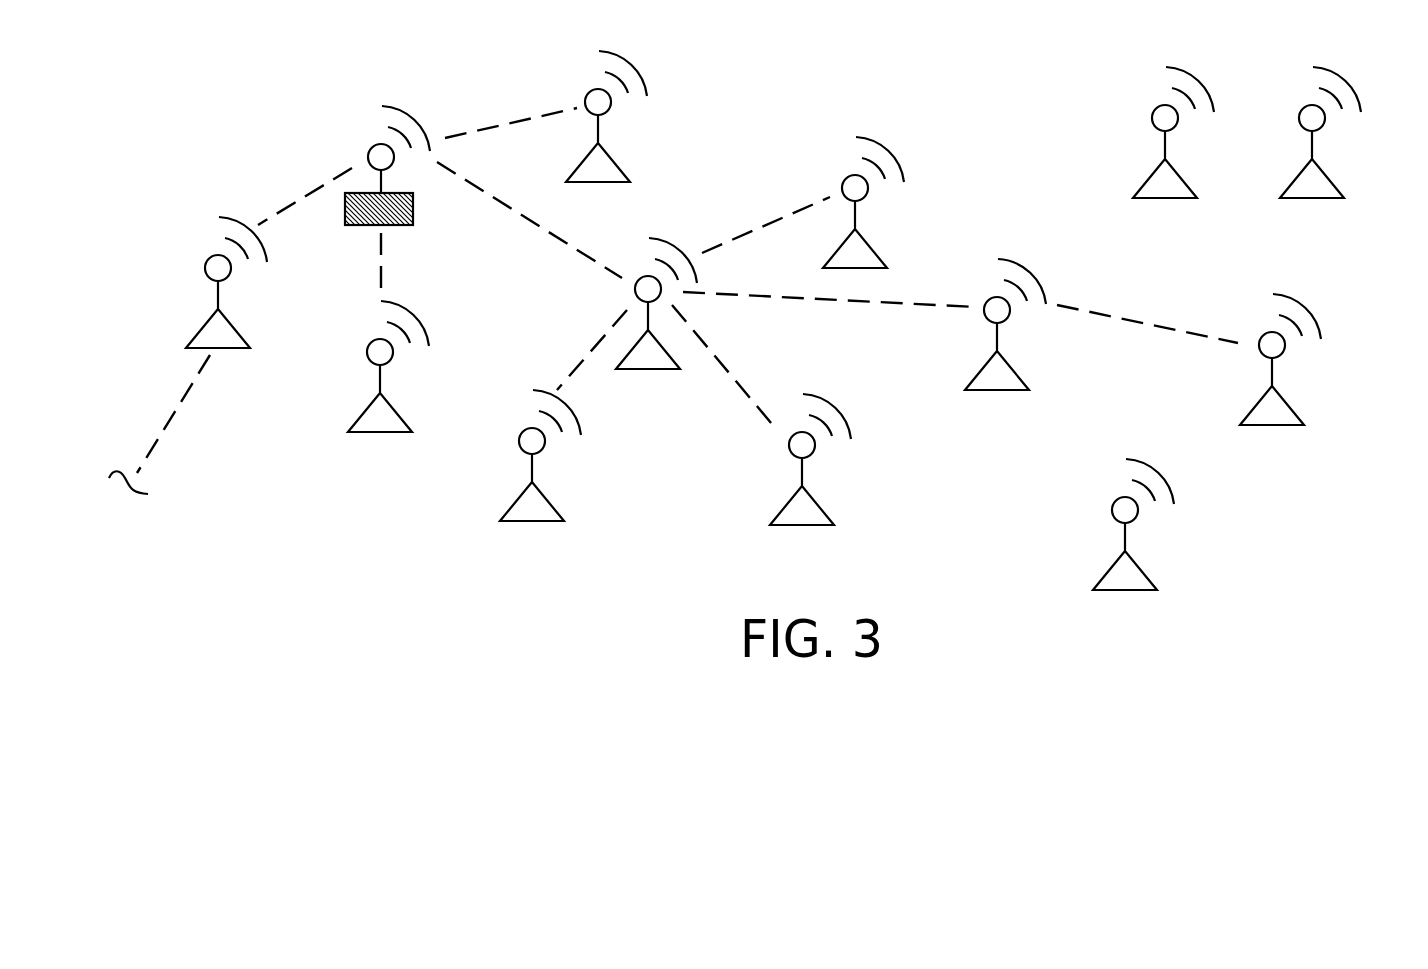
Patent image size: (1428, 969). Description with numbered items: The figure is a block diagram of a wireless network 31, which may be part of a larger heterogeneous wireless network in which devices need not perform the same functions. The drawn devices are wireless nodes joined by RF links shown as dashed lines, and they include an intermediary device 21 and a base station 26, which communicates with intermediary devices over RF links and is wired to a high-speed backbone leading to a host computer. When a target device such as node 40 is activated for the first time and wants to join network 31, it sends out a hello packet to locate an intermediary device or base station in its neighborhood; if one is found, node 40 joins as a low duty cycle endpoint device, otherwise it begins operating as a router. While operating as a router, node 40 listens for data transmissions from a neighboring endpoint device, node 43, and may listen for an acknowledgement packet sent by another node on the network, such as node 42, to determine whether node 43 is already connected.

The intermediary device 21 is at (229, 323).
The base station 26 is at (397, 225).
The wireless network 31 is at (968, 145).
The node 40 is at (1284, 400).
The node 42 is at (984, 365).
The node 43 is at (1158, 198).